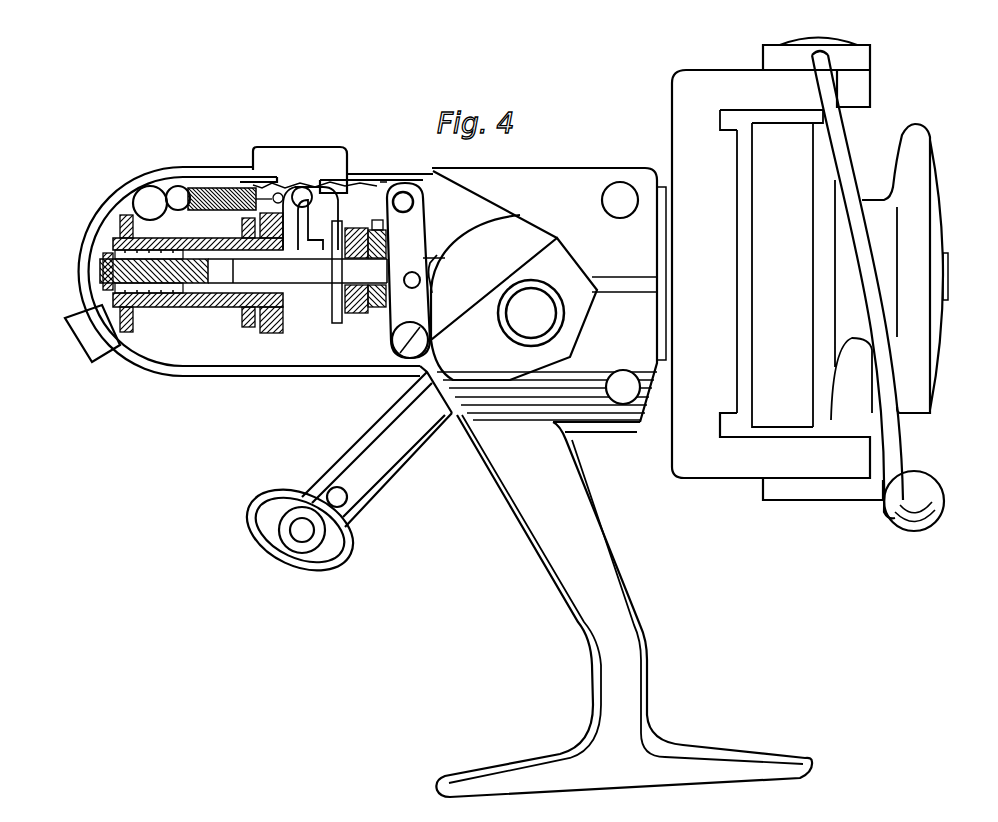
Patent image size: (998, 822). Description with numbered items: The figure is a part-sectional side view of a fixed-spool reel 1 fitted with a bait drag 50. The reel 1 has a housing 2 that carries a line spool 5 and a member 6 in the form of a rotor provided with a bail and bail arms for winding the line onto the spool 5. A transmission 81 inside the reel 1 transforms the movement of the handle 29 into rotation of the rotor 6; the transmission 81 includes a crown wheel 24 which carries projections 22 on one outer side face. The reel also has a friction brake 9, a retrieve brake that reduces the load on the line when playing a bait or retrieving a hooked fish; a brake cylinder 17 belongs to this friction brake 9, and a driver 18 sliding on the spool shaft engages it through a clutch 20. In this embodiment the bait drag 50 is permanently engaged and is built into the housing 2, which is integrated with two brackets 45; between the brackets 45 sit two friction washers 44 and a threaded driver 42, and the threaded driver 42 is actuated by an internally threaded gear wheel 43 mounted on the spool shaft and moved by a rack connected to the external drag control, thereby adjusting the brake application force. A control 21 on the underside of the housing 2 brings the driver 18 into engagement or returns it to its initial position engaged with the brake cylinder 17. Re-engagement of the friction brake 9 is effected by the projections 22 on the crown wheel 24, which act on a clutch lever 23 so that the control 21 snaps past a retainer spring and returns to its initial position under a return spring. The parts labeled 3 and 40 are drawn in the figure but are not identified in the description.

The fixed-spool reel 1 is at (910, 102).
The reel housing 2 is at (512, 166).
The foot / mounting leg 3 is at (500, 749).
The line spool 5 is at (926, 148).
The rotor member 6 is at (732, 68).
The friction brake 9 is at (158, 322).
The brake cylinder 17 is at (230, 306).
The driver 18 is at (272, 333).
The clutch 20 is at (288, 215).
The control 21 is at (286, 150).
The projections 22 is at (447, 282).
The clutch lever 23 is at (414, 247).
The crown wheel 24 is at (490, 368).
The handle 29 is at (310, 560).
The threaded shaft 40 is at (250, 308).
The threaded driver 42 is at (386, 221).
The internally threaded gear wheel 43 is at (382, 312).
The friction washers 44 is at (356, 314).
The brackets 45 is at (332, 312).
The bait drag 50 is at (325, 390).
The transmission 81 is at (540, 242).